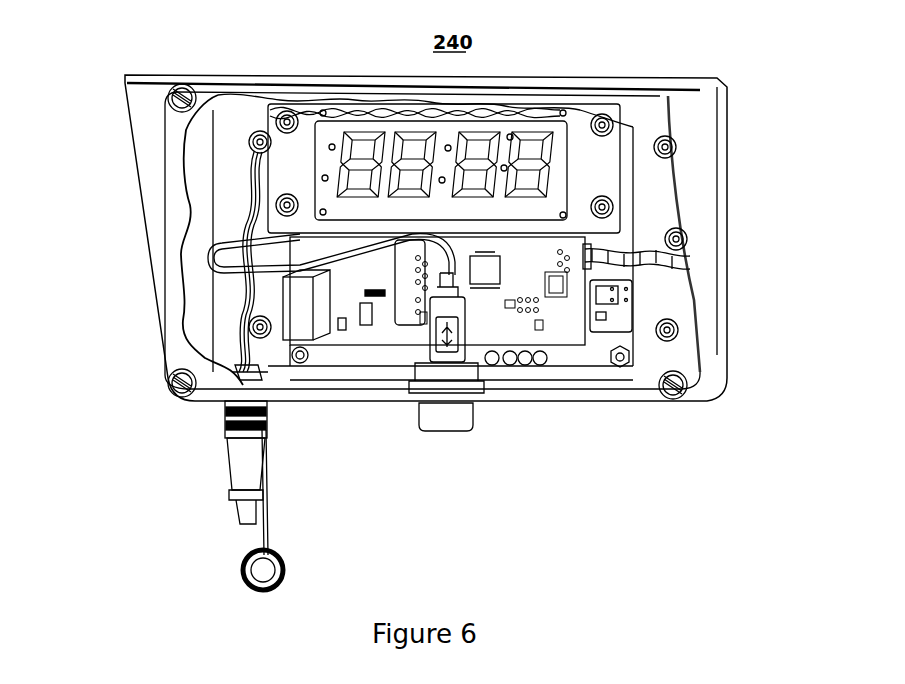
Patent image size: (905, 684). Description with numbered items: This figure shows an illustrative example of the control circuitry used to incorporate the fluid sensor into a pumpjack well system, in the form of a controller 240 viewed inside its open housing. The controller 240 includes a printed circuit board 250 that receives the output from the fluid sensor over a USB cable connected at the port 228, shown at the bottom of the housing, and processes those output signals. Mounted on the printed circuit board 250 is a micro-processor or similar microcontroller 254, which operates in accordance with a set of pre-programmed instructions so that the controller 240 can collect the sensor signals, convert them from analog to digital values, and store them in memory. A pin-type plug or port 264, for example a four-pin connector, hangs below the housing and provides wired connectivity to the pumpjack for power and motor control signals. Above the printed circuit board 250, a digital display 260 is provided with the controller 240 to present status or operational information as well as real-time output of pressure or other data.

The controller 240 is at (513, 405).
The digital display 260 is at (318, 162).
The printed circuit board 250 is at (588, 357).
The microcontroller 254 is at (483, 272).
The port 228 is at (438, 430).
The pin-type plug or port 264 is at (232, 467).